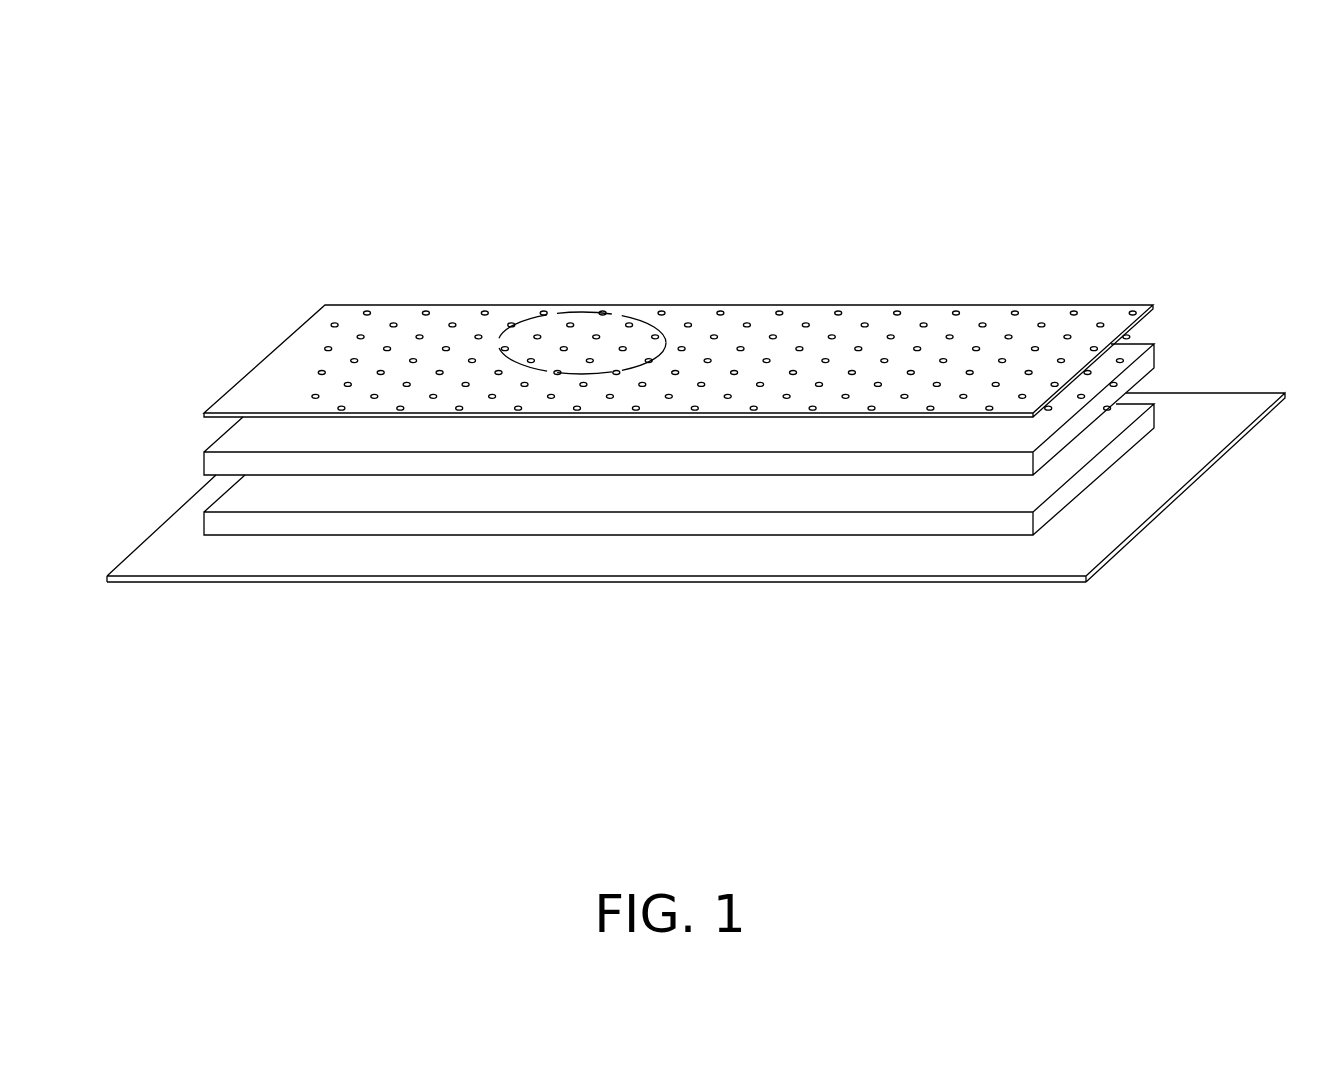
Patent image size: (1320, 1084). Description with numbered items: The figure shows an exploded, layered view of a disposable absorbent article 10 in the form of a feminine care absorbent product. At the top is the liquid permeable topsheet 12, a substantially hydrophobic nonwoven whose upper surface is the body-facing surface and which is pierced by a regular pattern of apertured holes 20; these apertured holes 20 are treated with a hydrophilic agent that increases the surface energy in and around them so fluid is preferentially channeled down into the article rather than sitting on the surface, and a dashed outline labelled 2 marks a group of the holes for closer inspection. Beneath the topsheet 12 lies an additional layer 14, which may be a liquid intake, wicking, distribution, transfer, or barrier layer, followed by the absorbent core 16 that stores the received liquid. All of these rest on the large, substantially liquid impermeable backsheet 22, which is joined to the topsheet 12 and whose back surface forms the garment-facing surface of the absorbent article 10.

The disposable absorbent article 10 is at (366, 157).
The liquid permeable topsheet 12 is at (245, 385).
The additional layer 14 is at (235, 440).
The absorbent core 16 is at (235, 500).
The apertured holes 20 is at (571, 323).
The liquid impermeable backsheet 22 is at (688, 565).
The section line for FIG. 2 is at (633, 317).